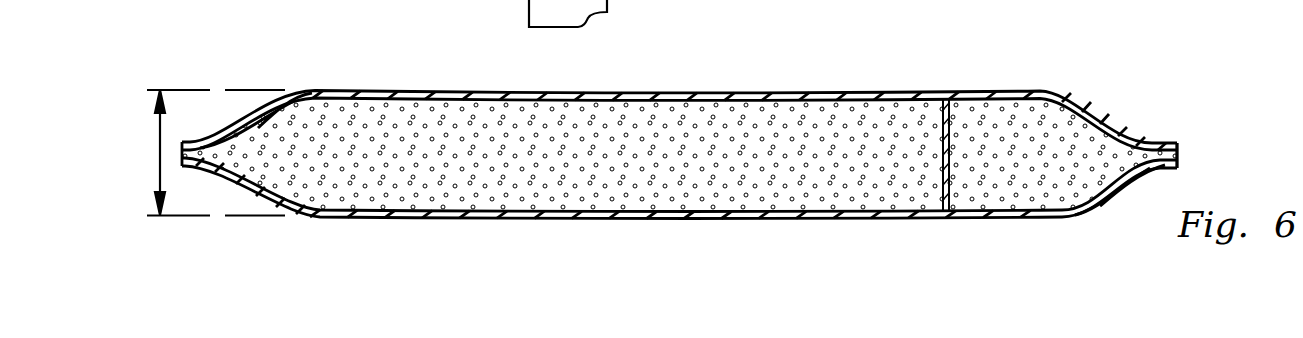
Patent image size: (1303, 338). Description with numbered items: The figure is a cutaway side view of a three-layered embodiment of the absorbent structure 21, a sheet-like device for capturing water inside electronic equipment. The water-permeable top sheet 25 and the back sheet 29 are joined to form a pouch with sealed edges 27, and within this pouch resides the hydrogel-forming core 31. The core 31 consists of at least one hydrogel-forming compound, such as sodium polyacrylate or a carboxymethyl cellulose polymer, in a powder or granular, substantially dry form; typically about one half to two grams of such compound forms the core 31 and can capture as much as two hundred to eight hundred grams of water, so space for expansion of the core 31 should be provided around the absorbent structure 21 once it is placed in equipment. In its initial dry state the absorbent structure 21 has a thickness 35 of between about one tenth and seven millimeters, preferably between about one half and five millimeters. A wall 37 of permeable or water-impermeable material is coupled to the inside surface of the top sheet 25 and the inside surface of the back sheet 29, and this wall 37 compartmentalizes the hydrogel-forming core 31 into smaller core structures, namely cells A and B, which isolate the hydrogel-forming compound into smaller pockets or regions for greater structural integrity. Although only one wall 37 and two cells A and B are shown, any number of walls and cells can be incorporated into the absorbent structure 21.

The absorbent structure 21 is at (983, 63).
The water-permeable top sheet 25 is at (855, 92).
The sealed edges 27 is at (1178, 142).
The back sheet 29 is at (465, 218).
The hydrogel-forming core 31 is at (620, 190).
The thickness 35 is at (160, 157).
The wall 37 is at (960, 187).
The cell A is at (855, 185).
The cell B is at (1052, 177).